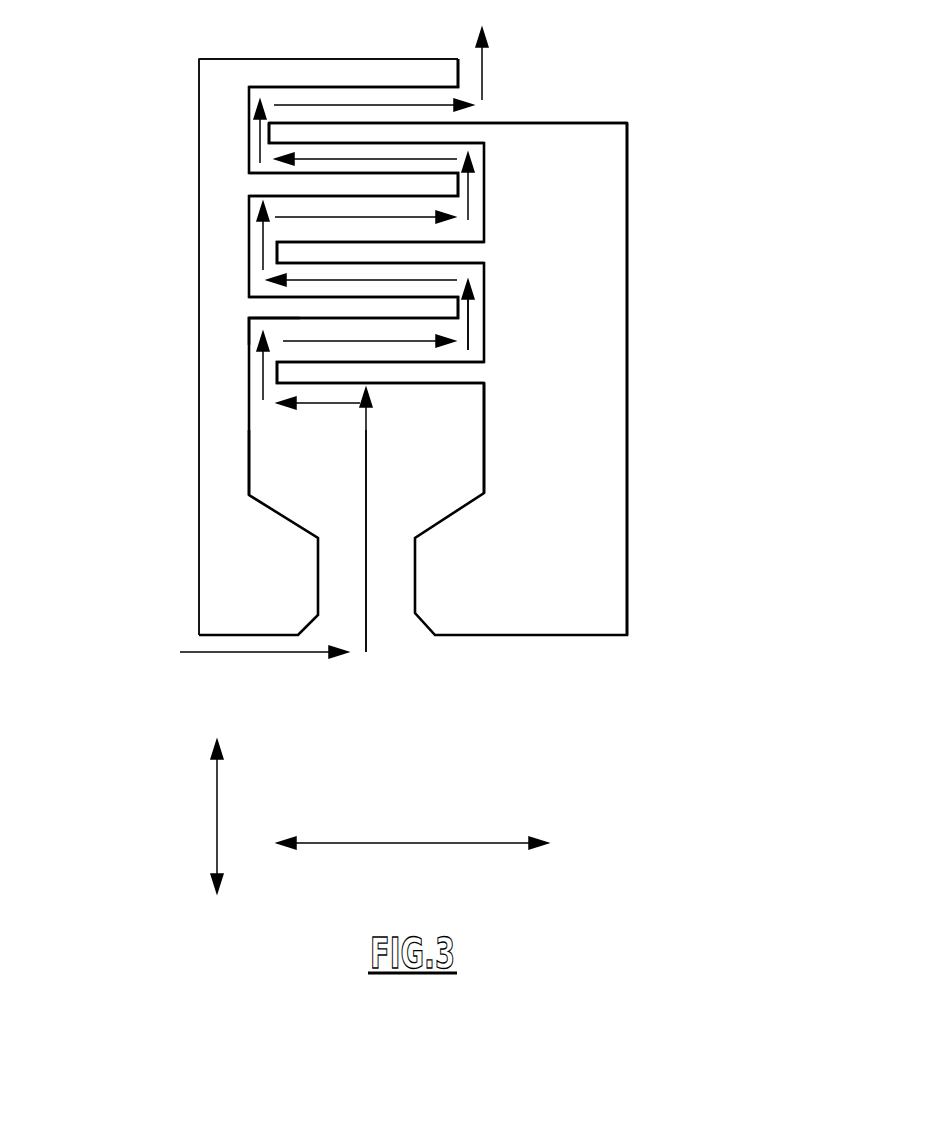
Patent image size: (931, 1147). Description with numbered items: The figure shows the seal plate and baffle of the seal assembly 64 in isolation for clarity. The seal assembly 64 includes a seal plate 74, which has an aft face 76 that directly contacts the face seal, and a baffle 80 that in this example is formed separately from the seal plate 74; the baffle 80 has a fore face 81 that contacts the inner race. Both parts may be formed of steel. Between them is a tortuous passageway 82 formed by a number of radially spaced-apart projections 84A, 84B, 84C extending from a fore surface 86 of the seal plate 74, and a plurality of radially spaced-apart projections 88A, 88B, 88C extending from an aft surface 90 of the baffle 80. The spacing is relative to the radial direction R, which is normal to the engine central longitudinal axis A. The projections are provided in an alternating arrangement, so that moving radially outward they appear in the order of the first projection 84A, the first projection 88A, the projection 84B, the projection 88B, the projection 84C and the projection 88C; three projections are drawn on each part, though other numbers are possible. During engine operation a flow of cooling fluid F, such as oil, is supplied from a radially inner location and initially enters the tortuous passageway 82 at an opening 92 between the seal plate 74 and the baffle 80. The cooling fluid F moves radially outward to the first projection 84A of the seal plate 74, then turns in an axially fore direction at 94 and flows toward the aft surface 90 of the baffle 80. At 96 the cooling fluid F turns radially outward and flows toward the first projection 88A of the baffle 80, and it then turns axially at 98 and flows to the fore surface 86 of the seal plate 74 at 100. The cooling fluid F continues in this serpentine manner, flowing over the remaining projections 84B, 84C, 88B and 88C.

The seal assembly 64 is at (557, 72).
The seal plate 74 is at (550, 564).
The aft face 76 is at (628, 190).
The baffle 80 is at (238, 251).
The fore face 81 is at (199, 385).
The tortuous passageway 82 is at (468, 314).
The first projection 84A is at (428, 370).
The projection 84B is at (457, 256).
The projection 84C is at (474, 131).
The fore surface 86 is at (484, 440).
The first projection 88A is at (312, 306).
The projection 88B is at (307, 183).
The projection 88C is at (305, 73).
The aft surface 90 is at (249, 449).
The opening 92 is at (388, 567).
The turn location 94 is at (372, 388).
The turn location 96 is at (272, 402).
The turn location 98 is at (262, 327).
The location at fore surface 100 is at (462, 348).
The cooling fluid F is at (368, 452).
The radial direction R is at (217, 831).
The engine central longitudinal axis A is at (411, 843).